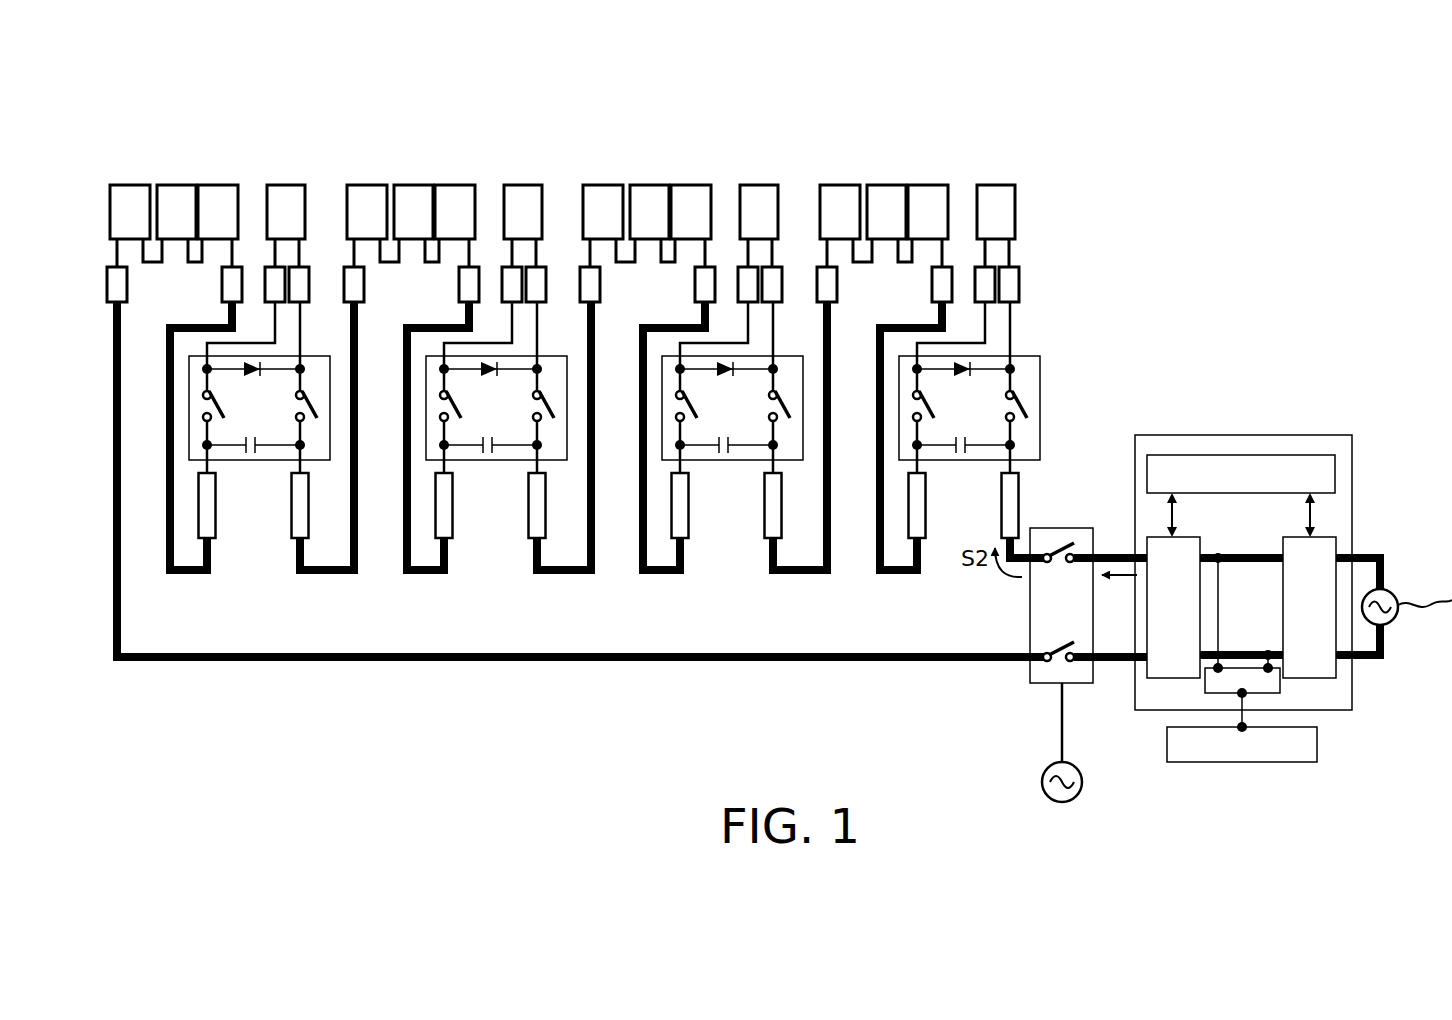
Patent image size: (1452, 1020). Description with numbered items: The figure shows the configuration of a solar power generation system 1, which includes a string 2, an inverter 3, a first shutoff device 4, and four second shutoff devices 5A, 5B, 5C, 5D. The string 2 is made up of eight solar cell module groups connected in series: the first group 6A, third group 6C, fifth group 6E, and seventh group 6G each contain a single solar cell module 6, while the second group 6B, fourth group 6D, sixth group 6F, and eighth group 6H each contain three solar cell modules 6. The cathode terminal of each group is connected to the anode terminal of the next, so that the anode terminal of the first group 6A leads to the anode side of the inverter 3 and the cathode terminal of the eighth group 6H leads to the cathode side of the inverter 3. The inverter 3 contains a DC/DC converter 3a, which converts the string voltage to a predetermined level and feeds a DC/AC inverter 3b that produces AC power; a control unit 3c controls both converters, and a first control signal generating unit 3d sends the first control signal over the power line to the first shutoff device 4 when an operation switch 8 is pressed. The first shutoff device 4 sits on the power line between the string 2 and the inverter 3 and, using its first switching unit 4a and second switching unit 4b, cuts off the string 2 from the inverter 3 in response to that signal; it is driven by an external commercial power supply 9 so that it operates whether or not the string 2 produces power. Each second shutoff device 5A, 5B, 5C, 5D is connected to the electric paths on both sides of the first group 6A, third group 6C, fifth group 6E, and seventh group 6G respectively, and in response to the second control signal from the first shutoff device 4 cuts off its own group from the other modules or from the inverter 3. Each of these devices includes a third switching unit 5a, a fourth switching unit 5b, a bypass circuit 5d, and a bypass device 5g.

The solar power generation system 1 is at (1192, 142).
The string 2 is at (117, 63).
The inverter 3 is at (1274, 569).
The DC/DC converter 3a is at (1170, 678).
The DC/AC inverter 3b is at (1320, 680).
The control unit 3c is at (1335, 472).
The first control signal generating unit 3d is at (1270, 695).
The first shutoff device 4 is at (1058, 606).
The first switching unit 4a is at (1053, 573).
The second switching unit 4b is at (1047, 674).
The second shutoff device 5A is at (965, 462).
The second shutoff device 5B is at (728, 462).
The second shutoff device 5C is at (492, 462).
The second shutoff device 5D is at (255, 462).
The third switching unit 5a is at (313, 427).
The fourth switching unit 5b is at (199, 404).
The bypass circuit 5d is at (608, 430).
The bypass device 5g is at (608, 383).
The solar cell module 6 is at (561, 184).
The first solar cell module group 6A is at (967, 130).
The second solar cell module group 6B is at (828, 130).
The third solar cell module group 6C is at (730, 130).
The fourth solar cell module group 6D is at (591, 130).
The fifth solar cell module group 6E is at (494, 130).
The sixth solar cell module group 6F is at (355, 130).
The seventh solar cell module group 6G is at (257, 130).
The eighth solar cell module group 6H is at (118, 130).
The operation switch 8 is at (1242, 762).
The commercial power supply 9 is at (1062, 802).